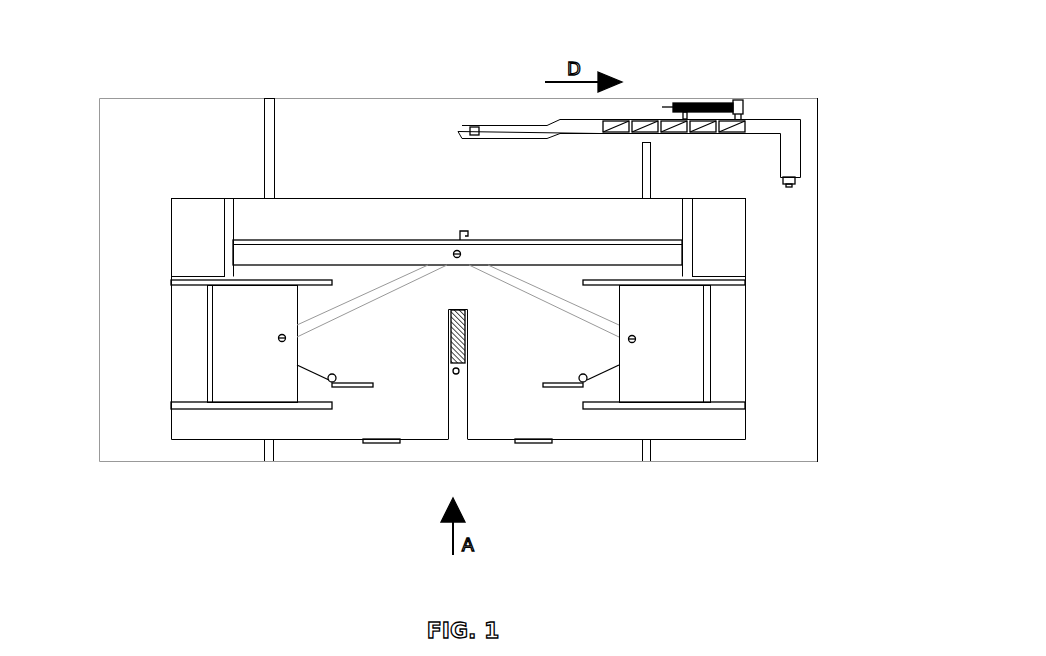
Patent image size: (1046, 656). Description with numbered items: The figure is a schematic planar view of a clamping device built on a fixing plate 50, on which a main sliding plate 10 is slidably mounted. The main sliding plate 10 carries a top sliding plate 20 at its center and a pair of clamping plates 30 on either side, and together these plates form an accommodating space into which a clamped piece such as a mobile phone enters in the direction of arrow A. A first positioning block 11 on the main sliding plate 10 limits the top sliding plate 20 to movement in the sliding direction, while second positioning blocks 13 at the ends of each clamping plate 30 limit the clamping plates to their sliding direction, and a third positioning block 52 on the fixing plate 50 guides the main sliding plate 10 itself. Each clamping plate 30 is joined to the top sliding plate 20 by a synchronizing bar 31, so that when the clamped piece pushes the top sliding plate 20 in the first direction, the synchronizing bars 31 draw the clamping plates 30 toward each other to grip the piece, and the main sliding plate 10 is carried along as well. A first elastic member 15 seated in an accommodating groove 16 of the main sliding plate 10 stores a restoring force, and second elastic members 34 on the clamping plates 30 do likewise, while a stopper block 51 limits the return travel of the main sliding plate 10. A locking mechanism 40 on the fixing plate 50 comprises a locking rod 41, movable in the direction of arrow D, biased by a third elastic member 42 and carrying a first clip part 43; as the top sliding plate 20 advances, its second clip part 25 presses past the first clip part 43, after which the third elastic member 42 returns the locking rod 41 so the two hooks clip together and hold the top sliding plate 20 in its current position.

The main sliding plate 10 is at (171, 215).
The first positioning block 11 is at (233, 210).
The second positioning block 13 is at (285, 278).
The first elastic member 15 is at (465, 337).
The accommodating groove 16 is at (462, 393).
The top sliding plate 20 is at (662, 239).
The second clip part 25 is at (460, 232).
The clamping plate 30 is at (208, 327).
The synchronizing bar 31 is at (365, 305).
The second elastic member 34 is at (345, 387).
The locking mechanism 40 is at (625, 97).
The locking rod 41 is at (773, 113).
The third elastic member 42 is at (705, 103).
The first clip part 43 is at (462, 120).
The fixing plate 50 is at (128, 98).
The stopper block 51 is at (388, 443).
The third positioning block 52 is at (273, 449).